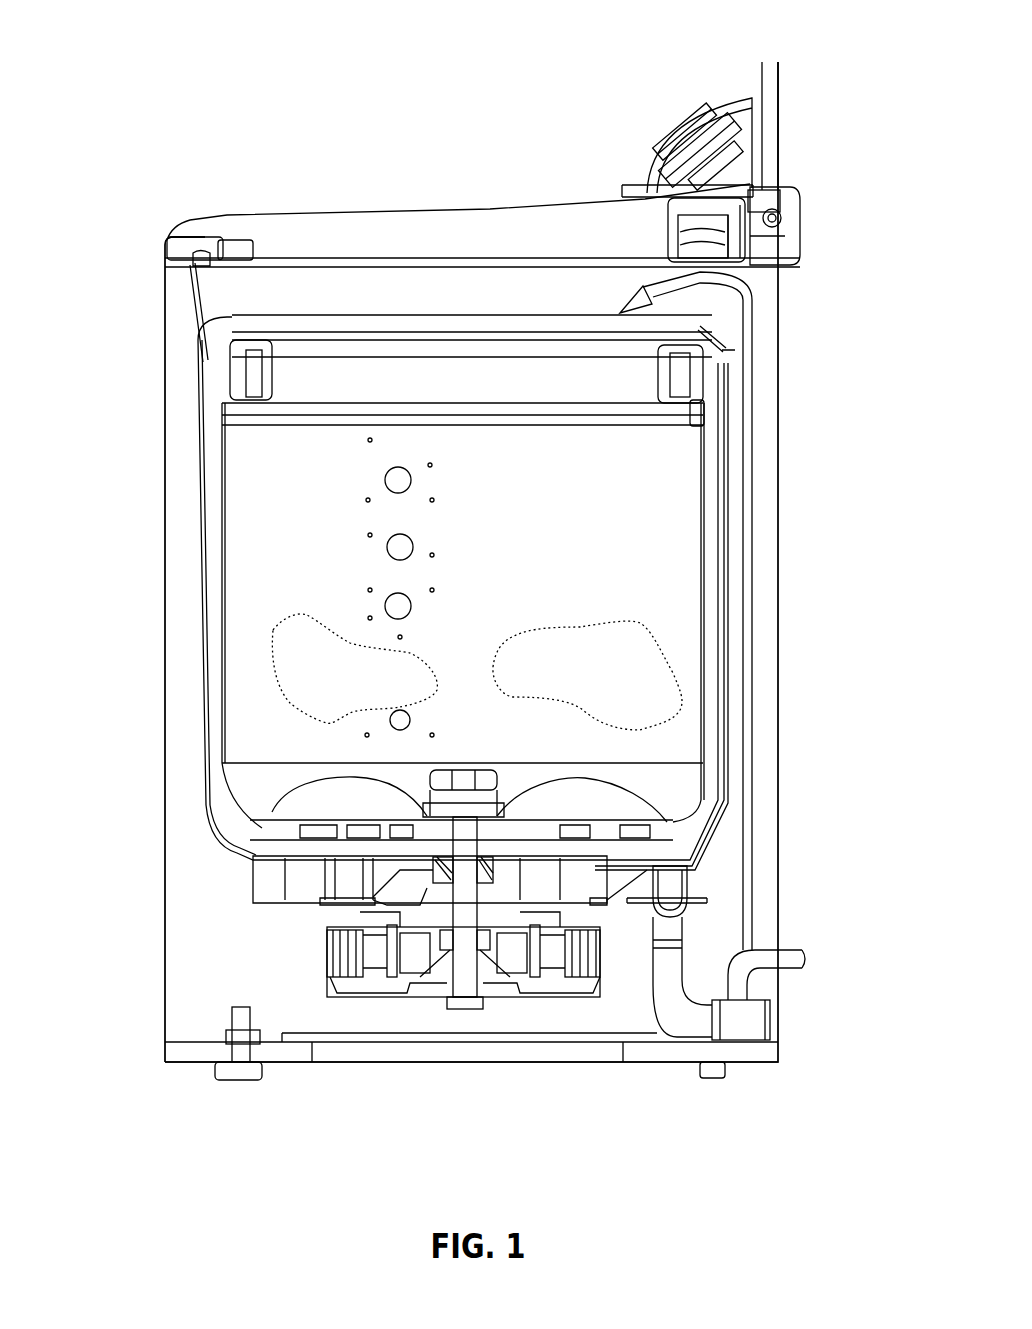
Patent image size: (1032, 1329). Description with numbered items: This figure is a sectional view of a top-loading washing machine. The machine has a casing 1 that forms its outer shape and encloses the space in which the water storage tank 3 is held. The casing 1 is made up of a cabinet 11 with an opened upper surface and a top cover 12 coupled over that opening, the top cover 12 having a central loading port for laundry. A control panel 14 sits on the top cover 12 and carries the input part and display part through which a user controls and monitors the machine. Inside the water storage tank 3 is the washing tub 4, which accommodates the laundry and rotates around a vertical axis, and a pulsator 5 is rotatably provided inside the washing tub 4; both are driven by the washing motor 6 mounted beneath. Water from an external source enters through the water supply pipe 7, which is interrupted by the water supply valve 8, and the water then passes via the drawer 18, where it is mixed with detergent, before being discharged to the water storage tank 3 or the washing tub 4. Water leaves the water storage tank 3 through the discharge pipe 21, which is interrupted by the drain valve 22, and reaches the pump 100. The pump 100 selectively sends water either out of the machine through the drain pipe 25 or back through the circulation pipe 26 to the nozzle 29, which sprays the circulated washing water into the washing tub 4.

The casing 1 is at (120, 147).
The cabinet 11 is at (165, 325).
The top cover 12 is at (238, 228).
The water storage tank 3 is at (200, 515).
The washing tub 4 is at (222, 575).
The pulsator 5 is at (320, 798).
The washing motor 6 is at (530, 982).
The water supply pipe 7 is at (772, 82).
The water supply valve 8 is at (790, 215).
The control panel 14 is at (680, 127).
The drawer 18 is at (672, 233).
The nozzle 29 is at (623, 307).
The circulation pipe 26 is at (750, 493).
The drain valve 22 is at (667, 900).
The discharge pipe 21 is at (692, 1023).
The drain pipe 25 is at (790, 960).
The pump 100 is at (773, 1023).